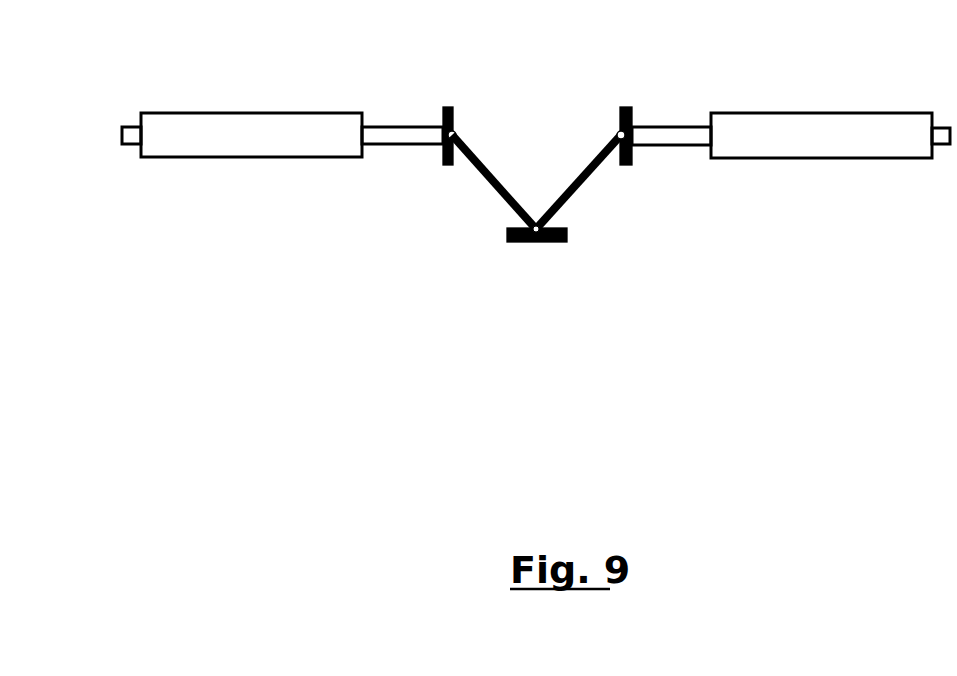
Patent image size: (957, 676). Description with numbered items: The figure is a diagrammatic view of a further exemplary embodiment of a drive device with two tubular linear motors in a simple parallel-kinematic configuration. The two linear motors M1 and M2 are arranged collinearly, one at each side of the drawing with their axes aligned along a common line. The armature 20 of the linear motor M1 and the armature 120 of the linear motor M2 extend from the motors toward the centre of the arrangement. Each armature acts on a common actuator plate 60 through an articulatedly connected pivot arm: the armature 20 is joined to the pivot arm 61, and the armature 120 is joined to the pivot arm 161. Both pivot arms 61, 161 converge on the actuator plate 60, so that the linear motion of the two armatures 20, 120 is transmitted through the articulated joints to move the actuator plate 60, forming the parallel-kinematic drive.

The linear motor M1 is at (832, 106).
The linear motor M2 is at (252, 106).
The armature 20 is at (660, 132).
The armature 120 is at (393, 137).
The pivot arm 61 is at (593, 178).
The pivot arm 161 is at (478, 175).
The actuator plate 60 is at (543, 242).